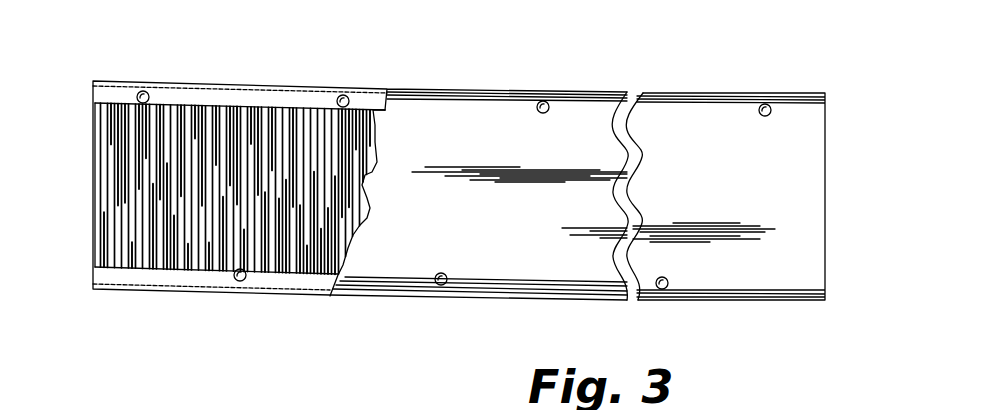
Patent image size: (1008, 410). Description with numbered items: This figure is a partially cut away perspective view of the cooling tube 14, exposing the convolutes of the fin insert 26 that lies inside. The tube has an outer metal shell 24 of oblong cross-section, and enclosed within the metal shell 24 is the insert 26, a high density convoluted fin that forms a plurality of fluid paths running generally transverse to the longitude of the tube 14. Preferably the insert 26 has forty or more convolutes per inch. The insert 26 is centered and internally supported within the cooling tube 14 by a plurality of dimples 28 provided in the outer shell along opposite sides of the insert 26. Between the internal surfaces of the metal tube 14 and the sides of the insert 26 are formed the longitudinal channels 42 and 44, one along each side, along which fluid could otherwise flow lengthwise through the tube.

The tube 14 is at (686, 92).
The outer metal shell 24 is at (210, 82).
The insert 26 is at (115, 178).
The dimples 28 is at (143, 91).
The longitudinal channel 42 is at (268, 97).
The longitudinal channel 44 is at (172, 277).